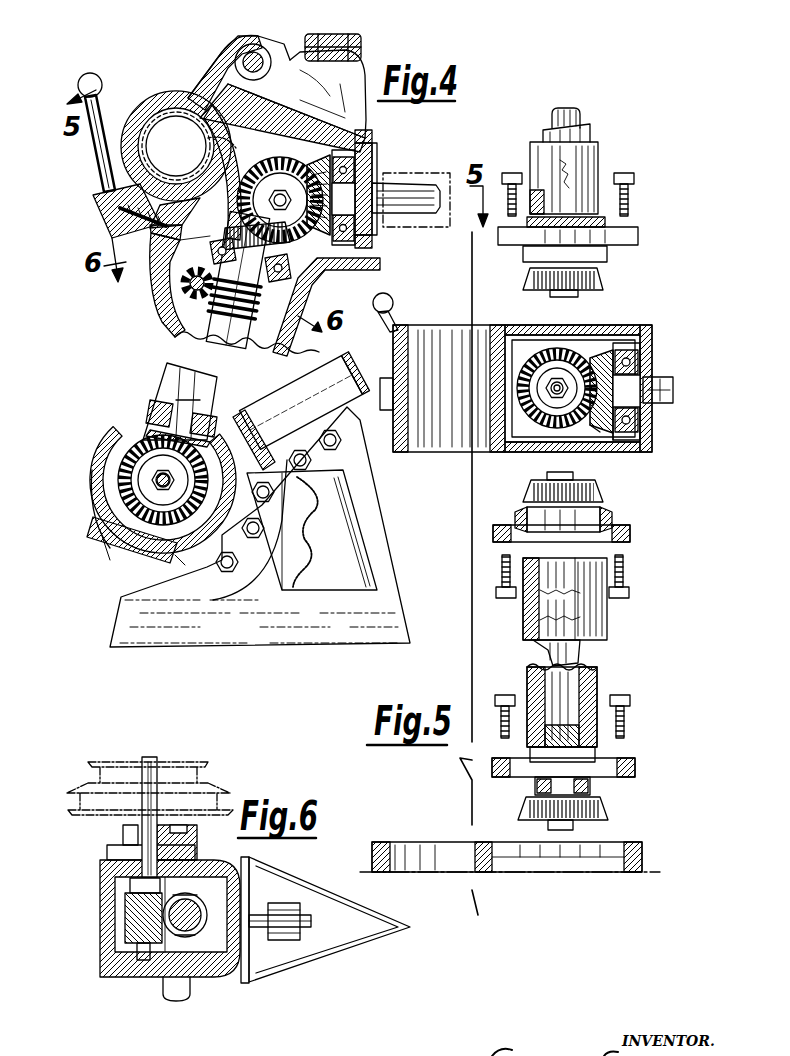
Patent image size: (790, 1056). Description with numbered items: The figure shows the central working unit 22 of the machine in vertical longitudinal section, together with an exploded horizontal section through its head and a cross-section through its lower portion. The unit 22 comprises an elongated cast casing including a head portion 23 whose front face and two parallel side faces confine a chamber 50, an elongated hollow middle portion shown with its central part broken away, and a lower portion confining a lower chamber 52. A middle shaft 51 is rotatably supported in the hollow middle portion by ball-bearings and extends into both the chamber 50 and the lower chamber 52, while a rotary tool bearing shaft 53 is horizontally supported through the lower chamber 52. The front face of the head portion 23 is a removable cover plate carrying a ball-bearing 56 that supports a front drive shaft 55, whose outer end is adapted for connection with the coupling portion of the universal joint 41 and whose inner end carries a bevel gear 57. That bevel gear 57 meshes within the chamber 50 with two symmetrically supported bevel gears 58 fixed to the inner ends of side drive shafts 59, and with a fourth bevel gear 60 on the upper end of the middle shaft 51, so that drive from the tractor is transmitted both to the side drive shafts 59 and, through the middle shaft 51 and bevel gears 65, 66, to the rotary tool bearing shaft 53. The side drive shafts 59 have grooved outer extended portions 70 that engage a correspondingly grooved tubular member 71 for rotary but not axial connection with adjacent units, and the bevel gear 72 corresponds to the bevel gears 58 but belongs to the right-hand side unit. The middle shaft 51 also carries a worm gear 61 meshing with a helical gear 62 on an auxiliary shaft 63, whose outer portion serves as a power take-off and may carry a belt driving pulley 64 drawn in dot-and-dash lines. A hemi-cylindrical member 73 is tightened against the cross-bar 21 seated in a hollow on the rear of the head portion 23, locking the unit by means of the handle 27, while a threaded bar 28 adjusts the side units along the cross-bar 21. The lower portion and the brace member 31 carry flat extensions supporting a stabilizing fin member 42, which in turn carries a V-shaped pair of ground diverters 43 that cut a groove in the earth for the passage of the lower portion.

In FIG. 4, the cross-bar 21 is at (134, 154).
In FIG. 4, the working unit 22 is at (163, 326).
In FIG. 6, the working unit 22 is at (222, 972).
In FIG. 4, the head portion 23 is at (362, 248).
In FIG. 5, the head portion 23 is at (486, 326).
In FIG. 4, the handle 27 is at (110, 126).
In FIG. 5, the handle 27 is at (392, 314).
In FIG. 4, the threaded bar 28 is at (258, 56).
In FIG. 4, the brace member 31 is at (292, 404).
In FIG. 4, the universal joint 41 is at (424, 176).
In FIG. 4, the stabilizing fin member 42 is at (255, 620).
In FIG. 6, the stabilizing fin member 42 is at (322, 926).
In FIG. 4, the ground diverters 43 is at (348, 546).
In FIG. 6, the ground diverters 43 is at (328, 950).
In FIG. 4, the chamber 50 is at (303, 141).
In FIG. 4, the middle shaft 51 is at (205, 358).
In FIG. 5, the middle shaft 51 is at (558, 380).
In FIG. 6, the middle shaft 51 is at (196, 898).
In FIG. 4, the lower chamber 52 is at (116, 538).
In FIG. 4, the rotary tool bearing shaft 53 is at (150, 524).
In FIG. 6, the rotary tool bearing shaft 53 is at (192, 990).
In FIG. 4, the front drive shaft 55 is at (402, 212).
In FIG. 5, the front drive shaft 55 is at (663, 404).
In FIG. 4, the ball-bearing 56 is at (374, 166).
In FIG. 5, the ball-bearing 56 is at (626, 334).
In FIG. 4, the bevel gear 57 is at (292, 268).
In FIG. 5, the bevel gear 57 is at (590, 434).
In FIG. 4, the bevel gears 58 is at (270, 160).
In FIG. 5, the bevel gears 58 is at (603, 284).
In FIG. 5, the side drive shaft 59 is at (582, 190).
In FIG. 4, the bevel gear 60 is at (216, 150).
In FIG. 5, the bevel gear 60 is at (540, 426).
In FIG. 4, the worm gear 61 is at (252, 322).
In FIG. 6, the worm gear 61 is at (186, 894).
In FIG. 4, the helical gear 62 is at (180, 288).
In FIG. 6, the helical gear 62 is at (143, 962).
In FIG. 6, the auxiliary shaft 63 is at (154, 784).
In FIG. 6, the belt driving pulley 64 is at (190, 802).
In FIG. 4, the bevel gear 65 is at (150, 442).
In FIG. 4, the bevel gear 66 is at (232, 551).
In FIG. 5, the outer extended portions 70 is at (580, 120).
In FIG. 5, the tubular member 71 is at (590, 146).
In FIG. 5, the bevel gear 72 is at (602, 808).
In FIG. 4, the hemi-cylindrical member 73 is at (174, 92).
In FIG. 5, the hemi-cylindrical member 73 is at (440, 455).